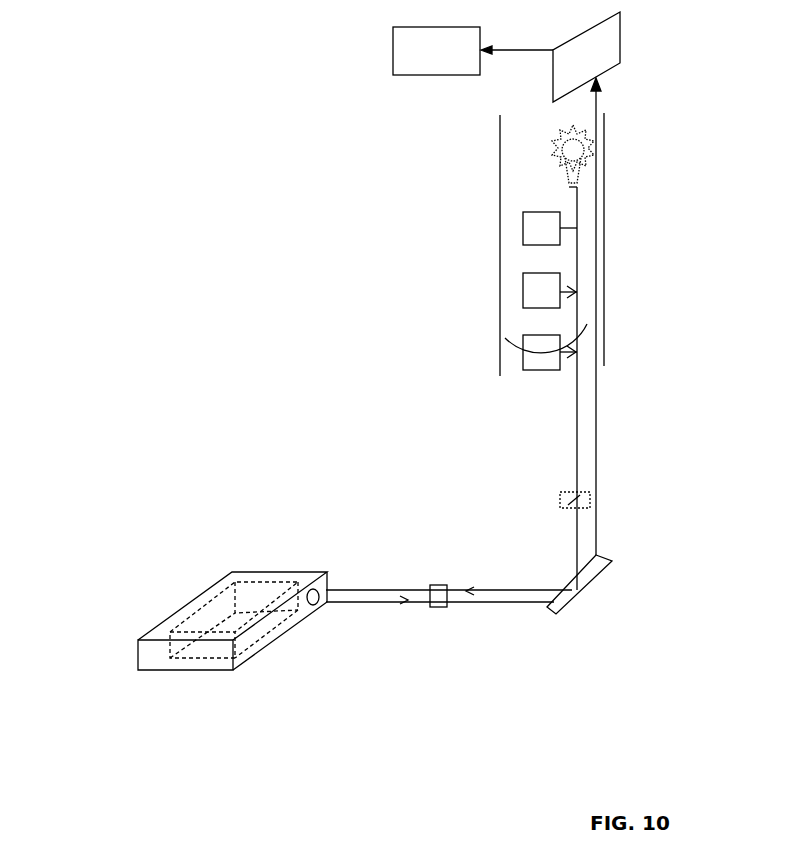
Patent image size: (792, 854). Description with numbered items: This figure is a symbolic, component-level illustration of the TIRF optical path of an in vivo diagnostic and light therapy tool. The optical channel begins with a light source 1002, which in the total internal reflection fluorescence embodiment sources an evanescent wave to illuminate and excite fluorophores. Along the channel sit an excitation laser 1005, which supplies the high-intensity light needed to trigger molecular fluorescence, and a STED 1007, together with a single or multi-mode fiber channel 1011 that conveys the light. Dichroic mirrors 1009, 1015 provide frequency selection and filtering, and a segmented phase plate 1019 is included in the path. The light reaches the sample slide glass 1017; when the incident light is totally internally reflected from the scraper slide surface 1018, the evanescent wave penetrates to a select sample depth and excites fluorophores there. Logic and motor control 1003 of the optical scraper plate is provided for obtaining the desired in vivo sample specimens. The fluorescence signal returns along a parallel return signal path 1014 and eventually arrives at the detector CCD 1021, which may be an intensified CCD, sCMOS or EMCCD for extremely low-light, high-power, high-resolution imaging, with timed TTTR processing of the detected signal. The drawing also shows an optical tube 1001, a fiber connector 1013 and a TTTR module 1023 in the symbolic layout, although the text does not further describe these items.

The optical tube 1001 is at (604, 205).
The light source 1002 is at (553, 153).
The logic and motor control 1003 is at (522, 227).
The excitation laser 1005 is at (522, 290).
The STED 1007 is at (533, 352).
The dichroic mirror 1009 is at (578, 352).
The fiber channel 1011 is at (577, 445).
The fiber connector 1013 is at (590, 491).
The return signal path 1014 is at (388, 602).
The dichroic mirror 1015 is at (612, 558).
The sample slide glass 1017 is at (147, 662).
The slide surface 1018 is at (242, 572).
The segmented phase plate 1019 is at (452, 607).
The detector CCD 1021 is at (623, 58).
The TTTR module 1023 is at (393, 48).